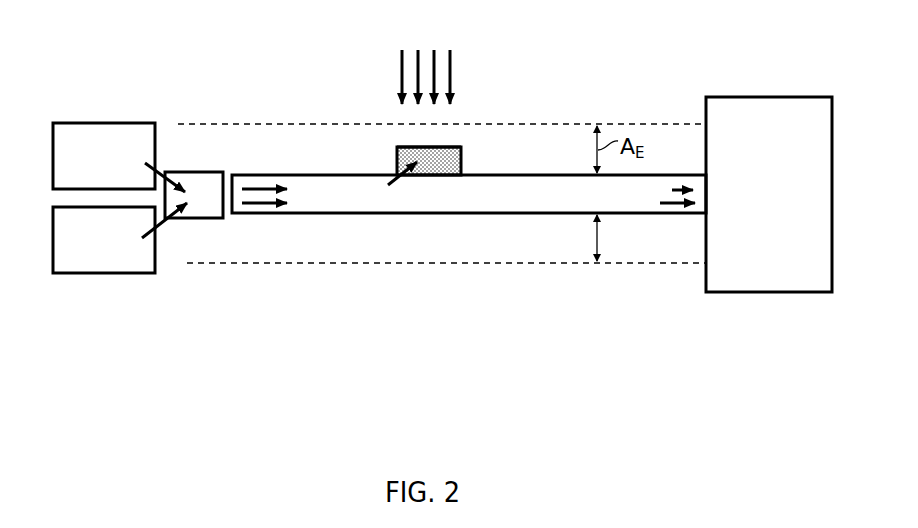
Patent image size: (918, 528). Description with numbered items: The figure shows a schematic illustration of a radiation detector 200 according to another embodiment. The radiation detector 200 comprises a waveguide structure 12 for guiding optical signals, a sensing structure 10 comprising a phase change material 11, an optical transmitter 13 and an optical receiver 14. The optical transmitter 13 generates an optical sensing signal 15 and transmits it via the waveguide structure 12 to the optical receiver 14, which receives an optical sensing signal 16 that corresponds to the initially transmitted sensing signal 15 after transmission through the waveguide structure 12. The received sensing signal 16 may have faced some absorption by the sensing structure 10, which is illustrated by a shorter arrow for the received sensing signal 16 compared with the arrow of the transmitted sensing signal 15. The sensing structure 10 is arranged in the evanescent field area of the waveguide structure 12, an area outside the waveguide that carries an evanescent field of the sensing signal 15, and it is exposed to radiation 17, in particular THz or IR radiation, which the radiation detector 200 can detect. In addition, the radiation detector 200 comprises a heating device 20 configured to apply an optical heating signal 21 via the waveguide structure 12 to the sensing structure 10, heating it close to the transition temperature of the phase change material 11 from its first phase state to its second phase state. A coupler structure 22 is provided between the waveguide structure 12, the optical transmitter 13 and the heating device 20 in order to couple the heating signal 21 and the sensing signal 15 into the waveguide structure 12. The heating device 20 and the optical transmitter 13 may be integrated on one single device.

The radiation detector 200 is at (805, 467).
The sensing structure 10 is at (462, 152).
The phase change material 11 is at (402, 147).
The waveguide structure 12 is at (458, 212).
The optical transmitter 13 is at (122, 253).
The optical receiver 14 is at (767, 117).
The optical sensing signal 15 is at (163, 218).
The received optical sensing signal 16 is at (667, 212).
The radiation 17 is at (453, 70).
The heating device 20 is at (102, 142).
The optical heating signal 21 is at (157, 168).
The coupler structure 22 is at (212, 185).